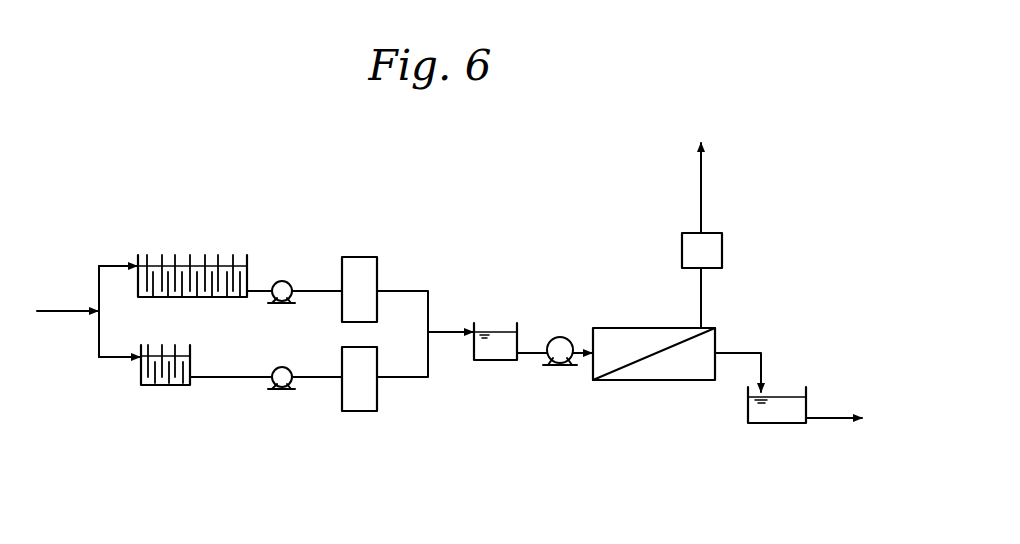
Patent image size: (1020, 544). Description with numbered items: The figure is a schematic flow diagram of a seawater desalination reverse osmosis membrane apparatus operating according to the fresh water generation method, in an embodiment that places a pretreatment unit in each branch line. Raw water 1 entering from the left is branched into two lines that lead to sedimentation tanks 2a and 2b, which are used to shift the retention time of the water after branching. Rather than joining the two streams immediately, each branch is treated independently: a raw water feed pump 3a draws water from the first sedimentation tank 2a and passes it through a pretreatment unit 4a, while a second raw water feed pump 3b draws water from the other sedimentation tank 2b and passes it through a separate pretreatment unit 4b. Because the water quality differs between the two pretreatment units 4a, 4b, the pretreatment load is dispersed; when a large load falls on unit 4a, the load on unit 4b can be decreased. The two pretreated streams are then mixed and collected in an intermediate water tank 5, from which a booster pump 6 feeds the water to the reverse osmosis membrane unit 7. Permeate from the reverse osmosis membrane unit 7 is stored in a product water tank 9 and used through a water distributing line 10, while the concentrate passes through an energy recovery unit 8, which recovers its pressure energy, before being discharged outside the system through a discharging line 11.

The raw water 1 is at (73, 315).
The sedimentation tank 2a is at (197, 297).
The sedimentation tank 2b is at (138, 373).
The raw water feed pump 3a is at (278, 304).
The raw water feed pump 3b is at (278, 390).
The pretreatment unit 4a is at (357, 257).
The pretreatment unit 4b is at (358, 411).
The intermediate water tank 5 is at (489, 361).
The booster pump 6 is at (557, 366).
The reverse osmosis membrane unit 7 is at (670, 381).
The energy recovery unit 8 is at (722, 257).
The product water tank 9 is at (748, 408).
The water distributing line 10 is at (837, 422).
The discharging line 11 is at (702, 190).